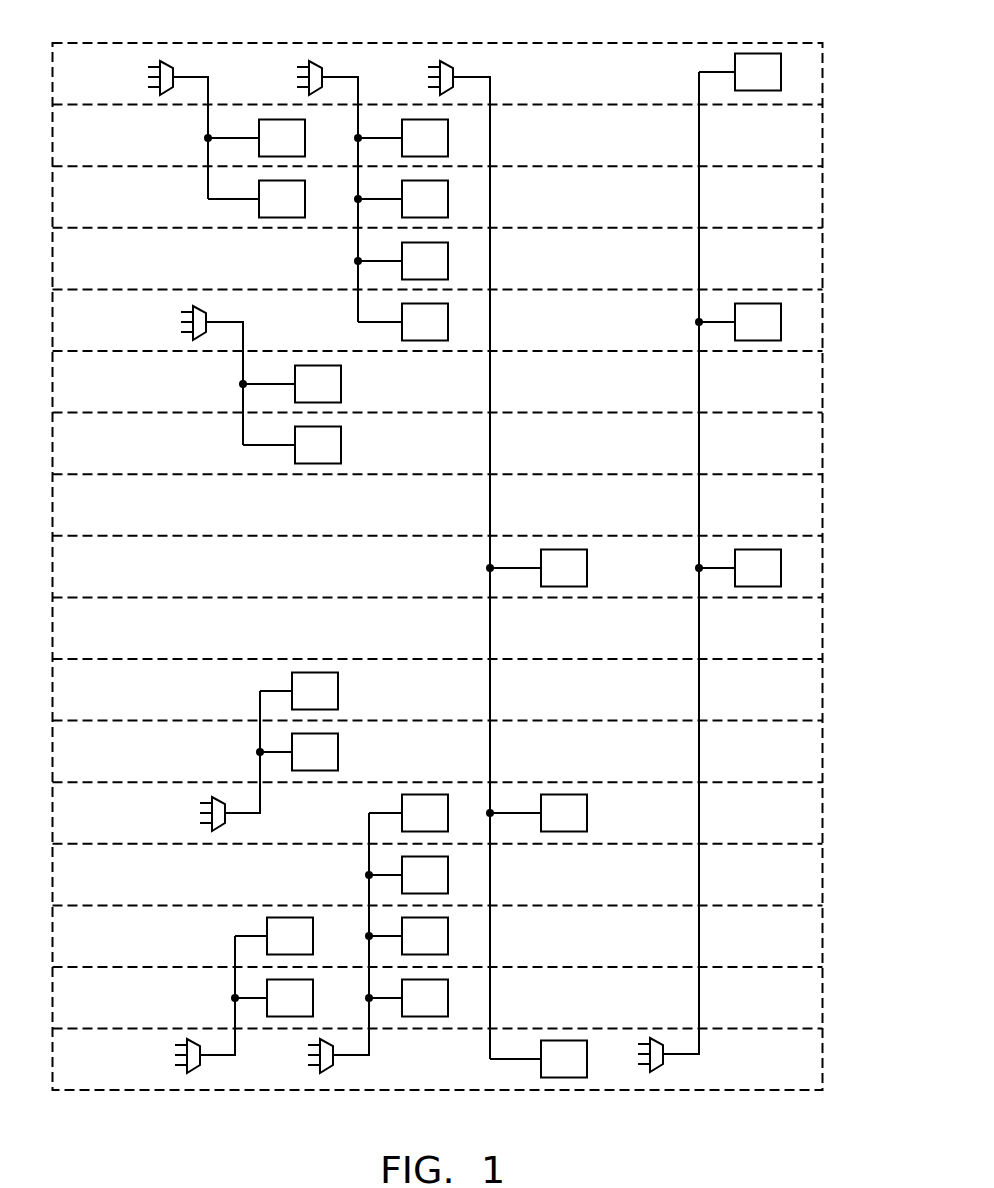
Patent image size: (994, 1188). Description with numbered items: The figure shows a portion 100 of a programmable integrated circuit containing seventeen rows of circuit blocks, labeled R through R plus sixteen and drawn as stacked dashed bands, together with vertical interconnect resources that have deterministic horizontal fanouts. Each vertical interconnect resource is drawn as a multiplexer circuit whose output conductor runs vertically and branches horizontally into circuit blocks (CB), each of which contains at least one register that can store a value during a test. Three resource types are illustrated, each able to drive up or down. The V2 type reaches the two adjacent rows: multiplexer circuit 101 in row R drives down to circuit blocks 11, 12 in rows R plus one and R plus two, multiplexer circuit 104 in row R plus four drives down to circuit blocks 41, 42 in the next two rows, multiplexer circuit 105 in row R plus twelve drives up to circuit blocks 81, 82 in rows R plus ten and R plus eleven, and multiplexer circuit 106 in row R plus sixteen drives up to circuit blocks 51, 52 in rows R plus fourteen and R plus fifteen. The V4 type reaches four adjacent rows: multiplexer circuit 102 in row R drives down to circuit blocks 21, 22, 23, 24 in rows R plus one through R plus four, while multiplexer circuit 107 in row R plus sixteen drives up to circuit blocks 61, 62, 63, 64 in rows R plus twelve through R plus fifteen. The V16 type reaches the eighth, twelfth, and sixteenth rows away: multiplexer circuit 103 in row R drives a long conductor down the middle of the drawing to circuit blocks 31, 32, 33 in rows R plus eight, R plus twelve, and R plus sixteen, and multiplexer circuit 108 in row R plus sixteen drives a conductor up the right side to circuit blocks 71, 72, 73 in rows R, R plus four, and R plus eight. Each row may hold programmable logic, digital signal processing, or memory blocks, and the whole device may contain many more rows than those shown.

The portion of a programmable integrated circuit 100 is at (725, 43).
The multiplexer circuit 101 is at (172, 68).
The multiplexer circuit 102 is at (321, 68).
The multiplexer circuit 103 is at (452, 68).
The multiplexer circuit 104 is at (205, 313).
The multiplexer circuit 105 is at (224, 822).
The multiplexer circuit 106 is at (199, 1064).
The multiplexer circuit 107 is at (332, 1064).
The multiplexer circuit 108 is at (662, 1063).
The circuit block 11 is at (305, 128).
The circuit block 12 is at (305, 189).
The circuit block 21 is at (448, 128).
The circuit block 22 is at (448, 189).
The circuit block 23 is at (448, 251).
The circuit block 24 is at (448, 312).
The circuit block 31 is at (587, 558).
The circuit block 32 is at (587, 803).
The circuit block 33 is at (587, 1049).
The circuit block 41 is at (341, 374).
The circuit block 42 is at (341, 435).
The circuit block 51 is at (313, 926).
The circuit block 52 is at (313, 988).
The circuit block 61 is at (448, 803).
The circuit block 62 is at (448, 865).
The circuit block 63 is at (448, 926).
The circuit block 64 is at (448, 988).
The circuit block 71 is at (781, 62).
The circuit block 72 is at (781, 312).
The circuit block 73 is at (781, 558).
The circuit block 81 is at (338, 681).
The circuit block 82 is at (338, 742).